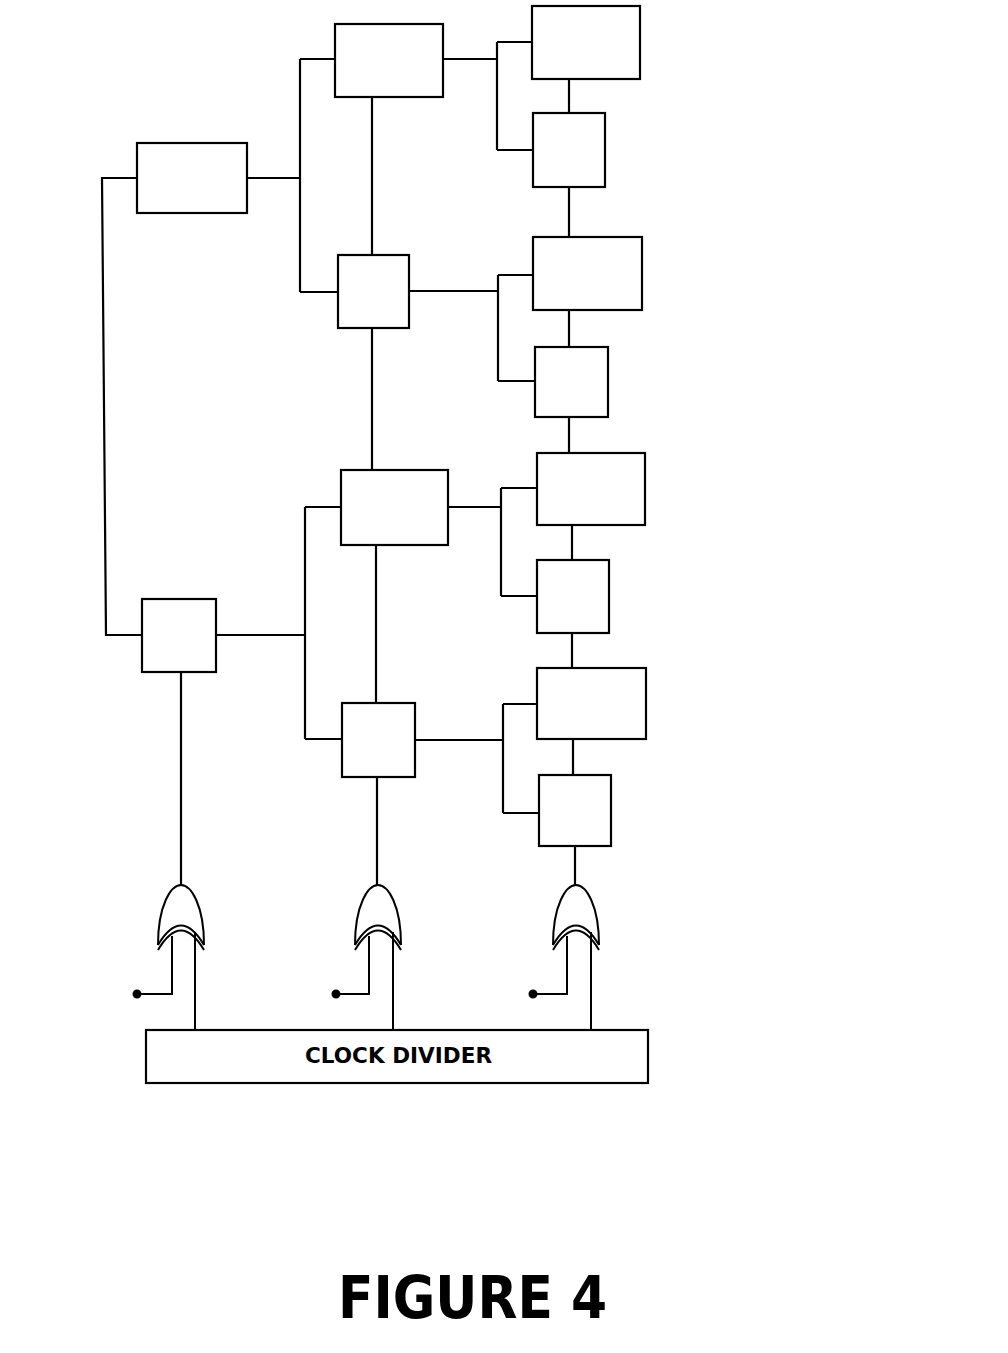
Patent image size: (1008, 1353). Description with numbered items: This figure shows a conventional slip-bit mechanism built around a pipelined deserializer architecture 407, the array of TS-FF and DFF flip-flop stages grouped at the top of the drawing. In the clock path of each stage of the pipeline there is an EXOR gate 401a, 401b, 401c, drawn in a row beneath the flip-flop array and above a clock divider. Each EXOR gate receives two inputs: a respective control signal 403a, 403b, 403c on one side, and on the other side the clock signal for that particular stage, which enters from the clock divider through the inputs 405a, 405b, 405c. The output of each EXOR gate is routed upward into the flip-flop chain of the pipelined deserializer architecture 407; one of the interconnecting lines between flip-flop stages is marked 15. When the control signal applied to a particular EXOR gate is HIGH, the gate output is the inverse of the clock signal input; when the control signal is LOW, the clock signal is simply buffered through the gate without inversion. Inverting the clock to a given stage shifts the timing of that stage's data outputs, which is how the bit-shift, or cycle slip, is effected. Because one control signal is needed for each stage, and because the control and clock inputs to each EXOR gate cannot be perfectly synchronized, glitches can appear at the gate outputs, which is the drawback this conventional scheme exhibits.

The EXOR gate 401a is at (197, 902).
The EXOR gate 401b is at (394, 902).
The EXOR gate 401c is at (592, 902).
The control signal 403a is at (134, 991).
The control signal 403b is at (333, 991).
The control signal 403c is at (530, 991).
The clock input 405a is at (195, 994).
The clock input 405b is at (393, 994).
The clock input 405c is at (591, 994).
The pipelined deserializer architecture 407 is at (765, 0).
The interconnect line 15 is at (498, 328).